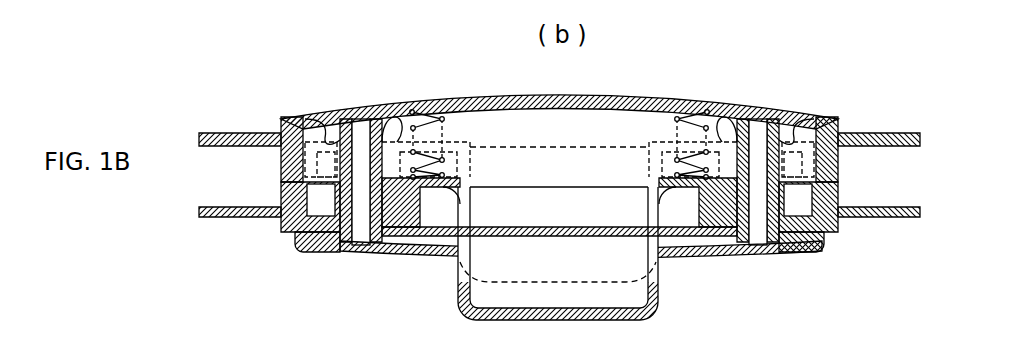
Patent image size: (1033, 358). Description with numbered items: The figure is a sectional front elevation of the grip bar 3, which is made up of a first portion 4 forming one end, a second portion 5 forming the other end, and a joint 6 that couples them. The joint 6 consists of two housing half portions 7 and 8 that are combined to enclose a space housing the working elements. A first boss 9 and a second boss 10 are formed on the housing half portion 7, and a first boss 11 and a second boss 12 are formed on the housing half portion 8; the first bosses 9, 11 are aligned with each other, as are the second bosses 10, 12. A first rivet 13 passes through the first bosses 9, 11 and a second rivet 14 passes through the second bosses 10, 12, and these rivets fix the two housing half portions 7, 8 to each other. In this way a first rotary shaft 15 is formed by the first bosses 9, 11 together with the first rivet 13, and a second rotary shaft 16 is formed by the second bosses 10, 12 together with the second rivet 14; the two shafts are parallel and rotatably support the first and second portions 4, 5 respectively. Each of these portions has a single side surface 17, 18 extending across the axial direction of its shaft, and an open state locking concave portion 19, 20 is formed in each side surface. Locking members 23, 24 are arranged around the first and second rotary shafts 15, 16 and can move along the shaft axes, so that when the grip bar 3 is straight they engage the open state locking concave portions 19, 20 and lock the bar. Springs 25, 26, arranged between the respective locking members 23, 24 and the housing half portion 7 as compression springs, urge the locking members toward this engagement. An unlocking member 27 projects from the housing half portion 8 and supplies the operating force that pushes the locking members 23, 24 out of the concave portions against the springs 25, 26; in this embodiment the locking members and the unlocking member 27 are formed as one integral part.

The grip bar 3 is at (627, 86).
The first portion 4 is at (224, 133).
The second portion 5 is at (905, 133).
The joint 6 is at (512, 96).
The housing half portion 7 is at (660, 100).
The housing half portion 8 is at (689, 258).
The first boss 9 is at (315, 118).
The second boss 10 is at (805, 112).
The first boss 11 is at (323, 243).
The second boss 12 is at (817, 243).
The first rivet 13 is at (360, 123).
The second rivet 14 is at (760, 123).
The first rotary shaft 15 is at (390, 112).
The second rotary shaft 16 is at (717, 112).
The side surface 17 is at (305, 116).
The side surface 18 is at (820, 117).
The open state locking concave portion 19 is at (390, 250).
The open state locking concave portion 20 is at (724, 252).
The locking member 23 is at (293, 215).
The locking member 24 is at (797, 207).
The spring 25 is at (443, 110).
The spring 26 is at (683, 90).
The unlocking member 27 is at (563, 321).